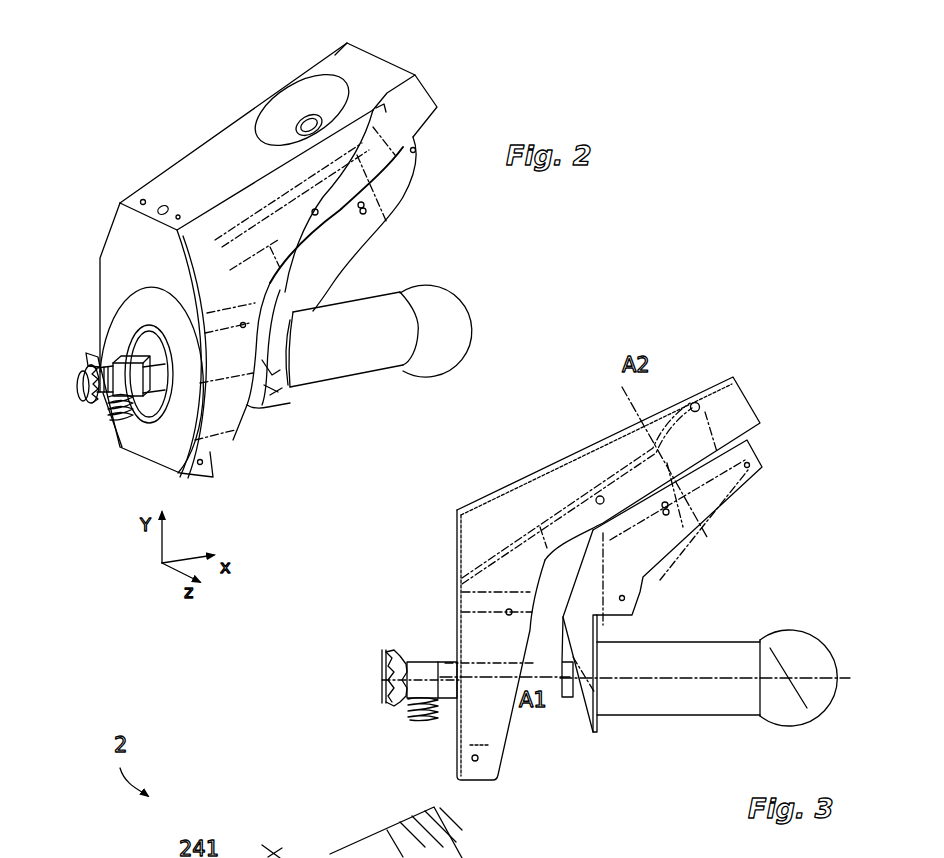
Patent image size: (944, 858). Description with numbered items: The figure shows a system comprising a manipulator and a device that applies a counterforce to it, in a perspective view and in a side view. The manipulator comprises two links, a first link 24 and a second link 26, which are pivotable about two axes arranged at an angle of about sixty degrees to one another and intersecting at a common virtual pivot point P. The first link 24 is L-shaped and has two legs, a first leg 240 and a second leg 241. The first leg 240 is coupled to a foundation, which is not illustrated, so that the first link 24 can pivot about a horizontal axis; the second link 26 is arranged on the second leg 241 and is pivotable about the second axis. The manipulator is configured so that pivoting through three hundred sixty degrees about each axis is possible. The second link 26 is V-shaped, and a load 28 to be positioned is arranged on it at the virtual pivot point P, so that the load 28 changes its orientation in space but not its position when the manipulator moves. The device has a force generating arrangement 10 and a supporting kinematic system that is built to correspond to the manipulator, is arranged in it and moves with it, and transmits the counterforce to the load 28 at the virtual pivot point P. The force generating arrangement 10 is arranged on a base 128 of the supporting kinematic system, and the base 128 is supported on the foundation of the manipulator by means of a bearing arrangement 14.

In FIG. 2, the force generating arrangement 10 is at (118, 420).
In FIG. 3, the force generating arrangement 10 is at (410, 718).
In FIG. 2, the bearing arrangement 14 is at (82, 390).
In FIG. 3, the bearing arrangement 14 is at (374, 632).
In FIG. 2, the first link 24 is at (117, 150).
In FIG. 3, the first link 24 is at (456, 476).
In FIG. 2, the second link 26 is at (397, 188).
In FIG. 3, the second link 26 is at (713, 484).
In FIG. 3, the load 28 is at (780, 708).
In FIG. 2, the base 128 is at (113, 357).
In FIG. 3, the base 128 is at (430, 665).
In FIG. 2, the first leg 240 is at (223, 430).
In FIG. 3, the first leg 240 is at (495, 710).
In FIG. 2, the second leg 241 is at (232, 127).
In FIG. 3, the second leg 241 is at (572, 455).
In FIG. 3, the virtual pivot point P is at (789, 673).